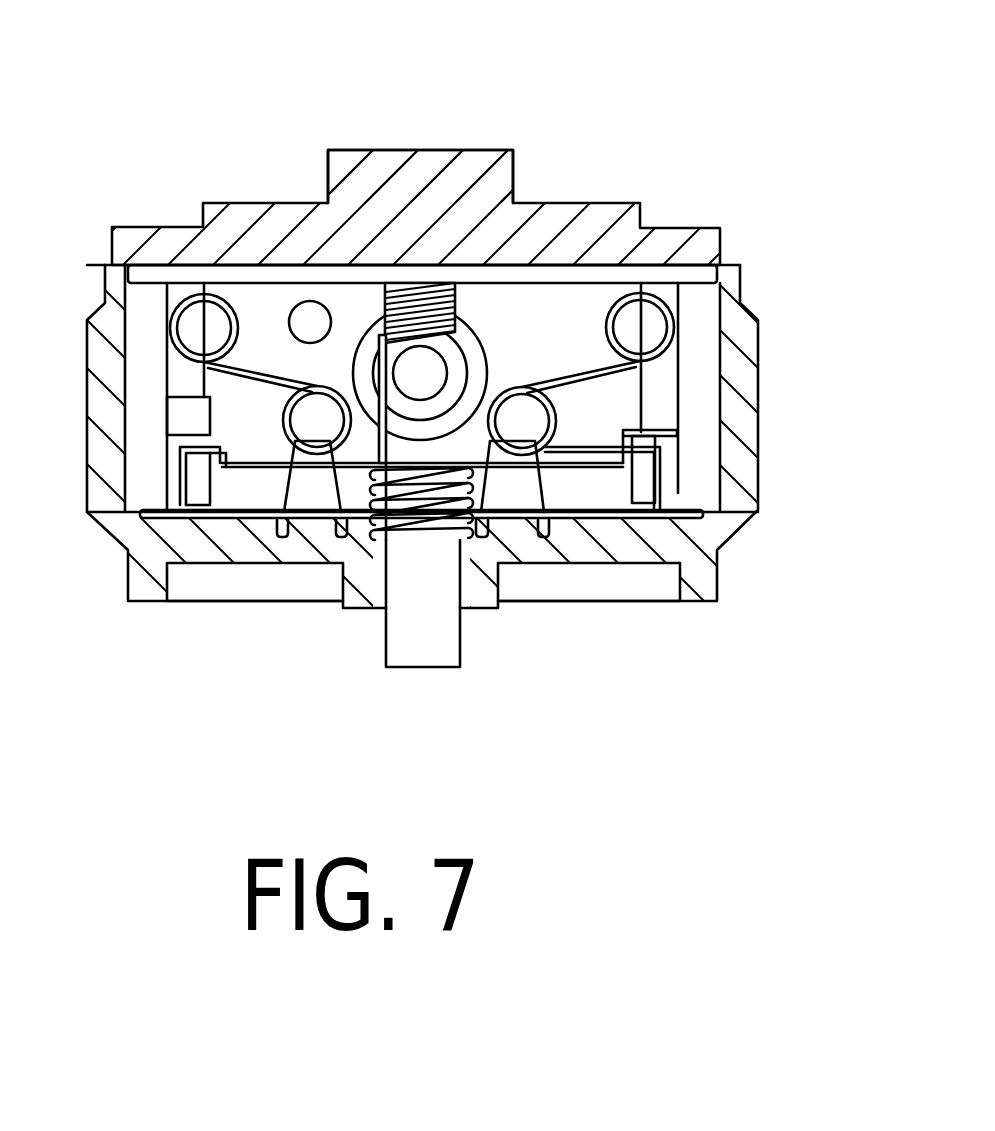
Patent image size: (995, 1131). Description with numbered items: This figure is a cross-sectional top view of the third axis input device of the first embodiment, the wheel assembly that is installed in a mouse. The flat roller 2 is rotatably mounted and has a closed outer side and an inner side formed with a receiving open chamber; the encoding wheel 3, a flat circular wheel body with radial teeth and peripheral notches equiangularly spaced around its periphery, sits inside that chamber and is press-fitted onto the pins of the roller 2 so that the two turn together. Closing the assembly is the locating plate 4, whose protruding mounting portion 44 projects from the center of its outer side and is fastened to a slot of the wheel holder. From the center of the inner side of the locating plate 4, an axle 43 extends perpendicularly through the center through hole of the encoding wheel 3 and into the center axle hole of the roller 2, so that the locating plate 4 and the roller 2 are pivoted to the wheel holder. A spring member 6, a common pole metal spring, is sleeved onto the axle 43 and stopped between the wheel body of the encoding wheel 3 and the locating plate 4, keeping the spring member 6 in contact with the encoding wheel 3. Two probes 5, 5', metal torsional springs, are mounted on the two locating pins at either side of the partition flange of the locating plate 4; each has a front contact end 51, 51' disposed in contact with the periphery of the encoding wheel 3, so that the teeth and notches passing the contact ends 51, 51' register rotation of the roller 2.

The roller 2 is at (748, 462).
The encoding wheel 3 is at (415, 509).
The locating plate 4 is at (392, 150).
The protruding mounting portion 44 is at (477, 167).
The probe 5 is at (651, 247).
The probe 5' is at (186, 241).
The front contact end 51 is at (701, 531).
The front contact end 51' is at (189, 560).
The spring member 6 is at (418, 540).
The axle 43 is at (455, 648).